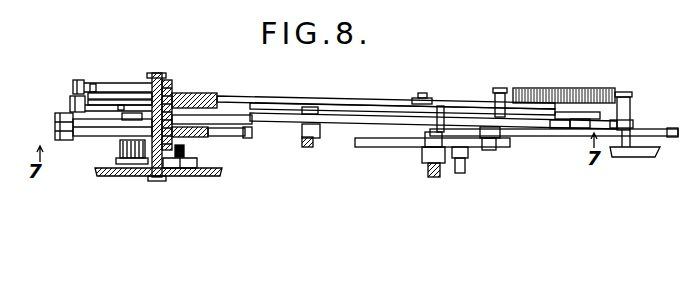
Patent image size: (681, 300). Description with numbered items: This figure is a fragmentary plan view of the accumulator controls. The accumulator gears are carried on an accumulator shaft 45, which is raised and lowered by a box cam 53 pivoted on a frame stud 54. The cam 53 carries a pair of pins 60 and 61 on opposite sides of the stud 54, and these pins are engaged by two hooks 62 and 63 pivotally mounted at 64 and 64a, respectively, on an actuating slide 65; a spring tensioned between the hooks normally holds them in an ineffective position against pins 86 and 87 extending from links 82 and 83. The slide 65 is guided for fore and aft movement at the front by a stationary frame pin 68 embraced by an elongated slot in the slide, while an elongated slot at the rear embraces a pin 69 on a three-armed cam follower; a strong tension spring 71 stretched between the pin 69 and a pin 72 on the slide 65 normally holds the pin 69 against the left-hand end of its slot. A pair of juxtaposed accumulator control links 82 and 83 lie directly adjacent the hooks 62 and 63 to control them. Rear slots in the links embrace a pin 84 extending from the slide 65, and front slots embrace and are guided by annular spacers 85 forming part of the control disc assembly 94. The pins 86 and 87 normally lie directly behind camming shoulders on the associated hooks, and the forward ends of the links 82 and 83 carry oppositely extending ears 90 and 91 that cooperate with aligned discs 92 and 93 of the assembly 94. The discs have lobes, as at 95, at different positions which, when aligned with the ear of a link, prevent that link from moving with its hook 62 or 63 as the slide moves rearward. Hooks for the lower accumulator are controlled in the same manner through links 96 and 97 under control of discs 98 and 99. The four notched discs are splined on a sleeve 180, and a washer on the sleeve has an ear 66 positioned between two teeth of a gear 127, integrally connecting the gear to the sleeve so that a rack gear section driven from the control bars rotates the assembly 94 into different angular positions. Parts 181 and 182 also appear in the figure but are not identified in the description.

The control disc assembly 94 is at (155, 61).
The ear 90 is at (76, 83).
The ear 91 is at (78, 102).
The disc 92 is at (100, 100).
The disc 93 is at (103, 105).
The lobe 95 is at (92, 86).
The disc 98 is at (132, 120).
The disc 99 is at (130, 137).
The collar 182 is at (128, 164).
The gear 127 is at (131, 161).
The sleeve 180 is at (212, 173).
The plate foot 181 is at (154, 181).
The annular spacers 85 is at (196, 97).
The link 96 is at (232, 130).
The link 97 is at (247, 137).
The ear 66 is at (185, 150).
The accumulator control link 82 is at (263, 99).
The accumulator control link 83 is at (287, 106).
The actuating slide 65 is at (348, 122).
The stationary frame pin 68 is at (313, 108).
The box cam 53 is at (380, 147).
The pin 84 is at (420, 93).
The pin 61 is at (440, 106).
The pin 60 is at (425, 140).
The frame stud 54 is at (432, 175).
The accumulator shaft 45 is at (459, 173).
The pin 87 is at (490, 138).
The pin 86 is at (488, 150).
The pin 72 is at (500, 88).
The pivot 64 is at (557, 119).
The tension spring 71 is at (577, 112).
The pivot 64a is at (565, 117).
The pin 69 is at (631, 113).
The hook 62 is at (555, 129).
The hook 63 is at (580, 130).